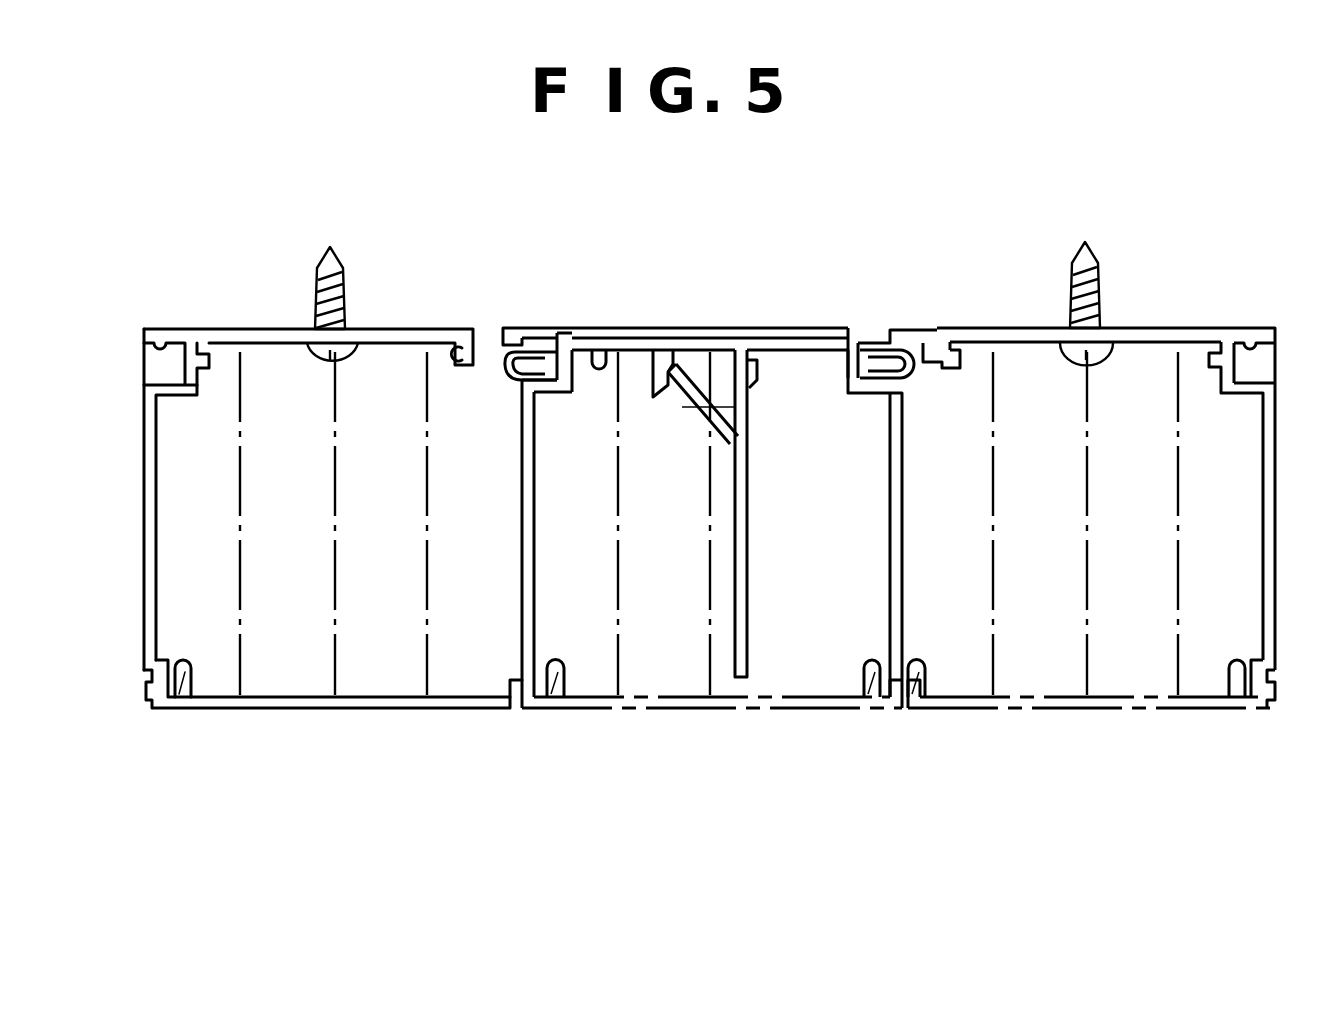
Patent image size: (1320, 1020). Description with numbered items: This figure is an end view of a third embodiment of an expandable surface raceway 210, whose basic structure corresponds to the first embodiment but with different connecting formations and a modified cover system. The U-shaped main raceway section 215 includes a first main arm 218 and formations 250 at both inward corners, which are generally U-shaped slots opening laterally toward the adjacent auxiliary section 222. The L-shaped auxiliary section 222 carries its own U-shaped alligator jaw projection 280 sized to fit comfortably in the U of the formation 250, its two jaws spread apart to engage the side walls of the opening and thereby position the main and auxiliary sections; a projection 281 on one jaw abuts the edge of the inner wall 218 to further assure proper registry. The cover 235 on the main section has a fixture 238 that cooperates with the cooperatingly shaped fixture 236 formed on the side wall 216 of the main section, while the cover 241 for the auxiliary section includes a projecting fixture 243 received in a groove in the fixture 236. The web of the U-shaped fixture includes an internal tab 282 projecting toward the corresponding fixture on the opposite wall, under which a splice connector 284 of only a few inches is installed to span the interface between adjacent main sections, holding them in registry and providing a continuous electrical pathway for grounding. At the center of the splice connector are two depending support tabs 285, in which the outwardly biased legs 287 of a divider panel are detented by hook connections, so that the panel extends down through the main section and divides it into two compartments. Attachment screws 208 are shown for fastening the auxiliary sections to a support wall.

The screw 208 is at (1103, 323).
The expandable raceway 210 is at (840, 300).
The main raceway section 215 is at (566, 328).
The side wall of the main section 216 is at (883, 500).
The first main arm 218 is at (672, 332).
The auxiliary section 222 is at (990, 328).
The cover 235 is at (728, 710).
The fixture 236 is at (877, 710).
The fixture 238 is at (870, 690).
The cover 241 is at (1137, 710).
The projecting fixture 243 is at (933, 703).
The formations 250 is at (548, 396).
The alligator jaw projection 280 is at (912, 375).
The projection 281 is at (937, 257).
The internal tab 282 is at (835, 368).
The splice connector 284 is at (600, 345).
The depending support tabs 285 is at (750, 522).
The outwardly biased legs 287 is at (700, 425).